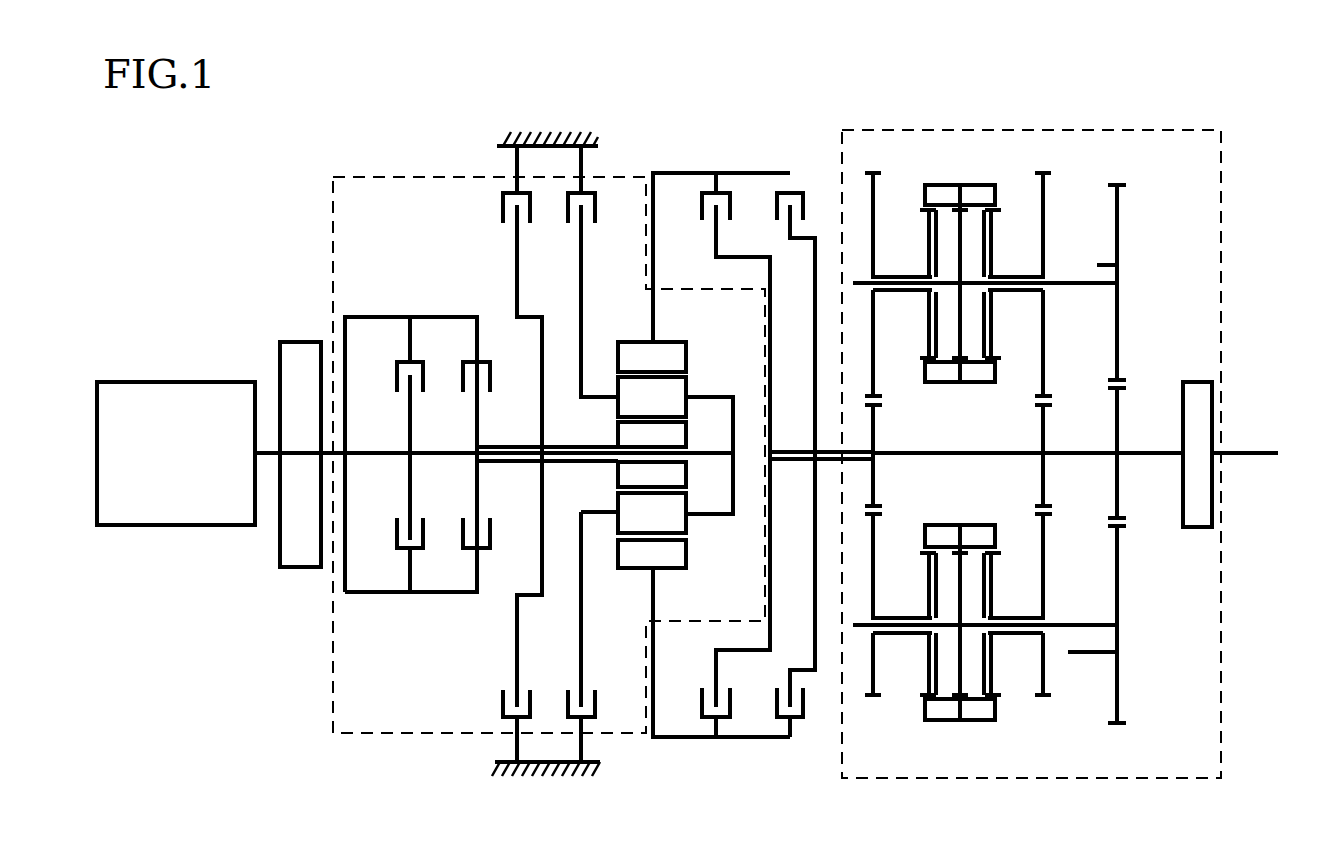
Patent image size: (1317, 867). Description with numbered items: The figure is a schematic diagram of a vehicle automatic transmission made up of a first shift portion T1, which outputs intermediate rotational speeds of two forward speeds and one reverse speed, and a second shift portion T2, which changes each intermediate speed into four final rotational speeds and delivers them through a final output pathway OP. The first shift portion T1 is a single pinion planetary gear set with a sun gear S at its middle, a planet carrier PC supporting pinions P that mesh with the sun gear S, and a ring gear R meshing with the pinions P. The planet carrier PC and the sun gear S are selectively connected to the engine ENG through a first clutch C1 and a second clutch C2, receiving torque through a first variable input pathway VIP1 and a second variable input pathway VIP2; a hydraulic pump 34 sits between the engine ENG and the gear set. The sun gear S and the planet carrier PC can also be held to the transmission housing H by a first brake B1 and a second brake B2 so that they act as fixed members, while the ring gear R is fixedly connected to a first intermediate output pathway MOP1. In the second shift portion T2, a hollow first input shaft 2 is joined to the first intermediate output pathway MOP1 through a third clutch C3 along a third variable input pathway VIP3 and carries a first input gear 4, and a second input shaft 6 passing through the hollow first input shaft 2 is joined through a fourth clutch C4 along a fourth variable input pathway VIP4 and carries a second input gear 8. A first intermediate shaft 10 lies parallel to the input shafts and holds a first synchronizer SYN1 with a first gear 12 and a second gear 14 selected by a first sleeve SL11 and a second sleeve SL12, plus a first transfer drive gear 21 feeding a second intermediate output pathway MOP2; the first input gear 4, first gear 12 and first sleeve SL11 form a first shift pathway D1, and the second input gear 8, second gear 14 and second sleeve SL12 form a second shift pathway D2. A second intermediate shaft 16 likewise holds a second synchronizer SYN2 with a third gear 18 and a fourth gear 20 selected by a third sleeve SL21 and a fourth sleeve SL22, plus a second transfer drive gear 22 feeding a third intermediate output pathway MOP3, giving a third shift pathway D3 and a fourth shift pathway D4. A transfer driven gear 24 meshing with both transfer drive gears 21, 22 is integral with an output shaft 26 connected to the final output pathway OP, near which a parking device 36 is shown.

The first input shaft 2 is at (825, 462).
The first input gear 4 is at (875, 431).
The second input shaft 6 is at (919, 458).
The second input gear 8 is at (1045, 433).
The first intermediate shaft 10 is at (1078, 288).
The first gear 12 is at (875, 237).
The second gear 14 is at (1045, 216).
The second intermediate shaft 16 is at (1078, 620).
The third gear 18 is at (875, 701).
The fourth gear 20 is at (1045, 701).
The first transfer drive gear 21 is at (1119, 209).
The second transfer drive gear 22 is at (1119, 690).
The transfer driven gear 24 is at (1119, 415).
The output shaft 26 is at (1257, 450).
The hydraulic pump 34 is at (280, 550).
The parking device 36 is at (1194, 528).
The first shift portion T1 is at (353, 742).
The second shift portion T2 is at (1106, 790).
The engine ENG is at (176, 453).
The transmission housing H is at (553, 130).
The first brake B1 is at (508, 454).
The second brake B2 is at (579, 454).
The first clutch C1 is at (396, 454).
The second clutch C2 is at (463, 455).
The third clutch C3 is at (783, 465).
The fourth clutch C4 is at (723, 455).
The ring gear R is at (652, 357).
The pinions P is at (652, 397).
The sun gear S is at (652, 434).
The planet carrier PC is at (607, 400).
The first synchronizer SYN1 is at (960, 271).
The second synchronizer SYN2 is at (960, 611).
The first sleeve SL11 is at (925, 184).
The second sleeve SL12 is at (993, 184).
The third sleeve SL21 is at (940, 721).
The fourth sleeve SL22 is at (981, 721).
The first shift pathway D1 is at (914, 302).
The second shift pathway D2 is at (1028, 296).
The third shift pathway D3 is at (885, 540).
The fourth shift pathway D4 is at (1028, 614).
The first variable input pathway VIP1 is at (348, 328).
The second variable input pathway VIP2 is at (494, 328).
The third variable input pathway VIP3 is at (822, 220).
The fourth variable input pathway VIP4 is at (740, 247).
The first intermediate output pathway MOP1 is at (660, 306).
The second intermediate output pathway MOP2 is at (1120, 266).
The third intermediate output pathway MOP3 is at (1130, 564).
The final output pathway OP is at (1243, 467).